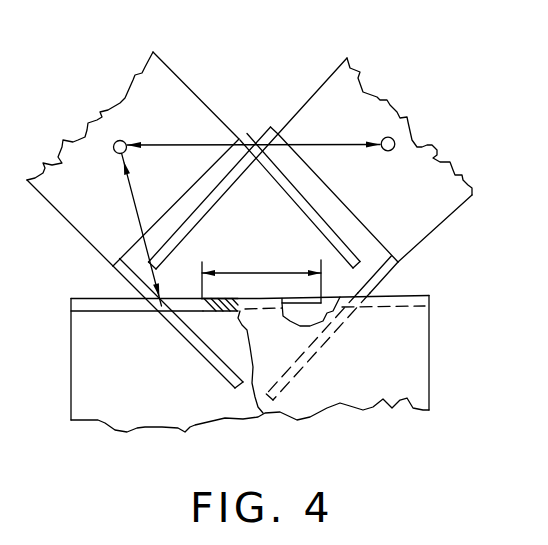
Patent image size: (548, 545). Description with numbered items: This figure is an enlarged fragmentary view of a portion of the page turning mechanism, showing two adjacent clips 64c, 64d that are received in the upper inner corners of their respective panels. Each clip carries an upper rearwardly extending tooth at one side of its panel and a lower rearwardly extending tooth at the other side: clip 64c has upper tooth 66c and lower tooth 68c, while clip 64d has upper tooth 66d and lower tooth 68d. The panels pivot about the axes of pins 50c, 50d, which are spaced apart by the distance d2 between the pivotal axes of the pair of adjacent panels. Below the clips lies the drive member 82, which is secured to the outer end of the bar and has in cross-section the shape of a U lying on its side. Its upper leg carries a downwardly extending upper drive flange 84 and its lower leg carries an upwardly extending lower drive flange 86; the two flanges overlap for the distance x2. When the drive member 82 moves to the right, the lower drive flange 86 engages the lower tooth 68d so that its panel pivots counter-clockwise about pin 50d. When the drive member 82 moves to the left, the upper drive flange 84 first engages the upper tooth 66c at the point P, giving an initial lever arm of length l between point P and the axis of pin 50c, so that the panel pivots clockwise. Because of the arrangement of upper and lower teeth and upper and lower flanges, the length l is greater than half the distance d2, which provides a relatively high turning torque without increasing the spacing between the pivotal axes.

The clip 64c is at (183, 100).
The clip 64d is at (327, 85).
The upper tooth 66c is at (222, 373).
The lower tooth 68c is at (322, 232).
The upper tooth 66d is at (209, 211).
The lower tooth 68d is at (298, 365).
The pin 50c is at (125, 139).
The pin 50d is at (390, 152).
The drive member 82 is at (423, 343).
The upper drive flange 84 is at (225, 311).
The lower drive flange 86 is at (304, 327).
The distance d d2 is at (253, 128).
The overlap distance x x2 is at (261, 271).
The lever arm length l is at (130, 185).
The engagement point P is at (160, 314).